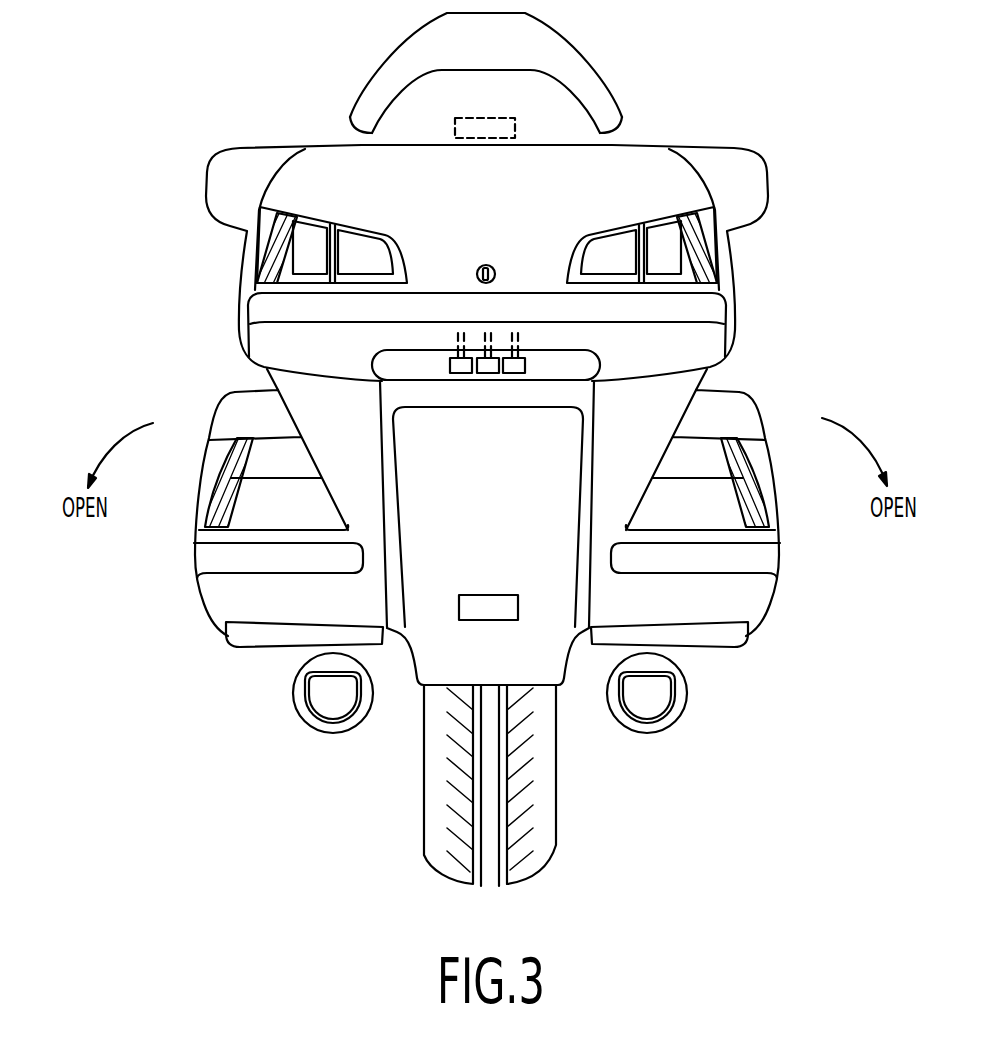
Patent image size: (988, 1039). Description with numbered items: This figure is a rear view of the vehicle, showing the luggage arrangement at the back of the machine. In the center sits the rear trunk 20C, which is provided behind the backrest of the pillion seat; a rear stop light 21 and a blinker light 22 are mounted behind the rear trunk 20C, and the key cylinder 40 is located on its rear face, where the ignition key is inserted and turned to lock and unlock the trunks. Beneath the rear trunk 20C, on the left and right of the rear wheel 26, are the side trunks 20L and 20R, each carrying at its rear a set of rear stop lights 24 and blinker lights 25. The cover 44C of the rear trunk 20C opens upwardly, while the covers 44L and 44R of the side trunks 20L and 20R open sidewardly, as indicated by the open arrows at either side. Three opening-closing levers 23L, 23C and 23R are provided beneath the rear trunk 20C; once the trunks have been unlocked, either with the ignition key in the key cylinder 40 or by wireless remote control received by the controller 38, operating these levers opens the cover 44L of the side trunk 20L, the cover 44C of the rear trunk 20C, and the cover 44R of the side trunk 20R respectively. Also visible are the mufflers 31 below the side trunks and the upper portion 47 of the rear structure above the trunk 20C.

The rear trunk 20C is at (668, 154).
The left side trunk 20L is at (213, 407).
The right side trunk 20R is at (770, 421).
The rear stop light 21 is at (362, 249).
The blinker light 22 is at (297, 257).
The left opening-closing lever 23L is at (461, 375).
The center opening-closing lever 23C is at (486, 375).
The right opening-closing lever 23R is at (514, 375).
The rear stop light 24 is at (247, 490).
The blinker light 25 is at (260, 446).
The rear wheel 26 is at (548, 860).
The muffler 31 is at (290, 690).
The controller 38 is at (494, 118).
The key cylinder 40 is at (495, 273).
The cover of the rear trunk 44C is at (510, 204).
The cover of the left side trunk 44L is at (252, 410).
The cover of the right side trunk 44R is at (727, 413).
The backrest 47 is at (413, 107).